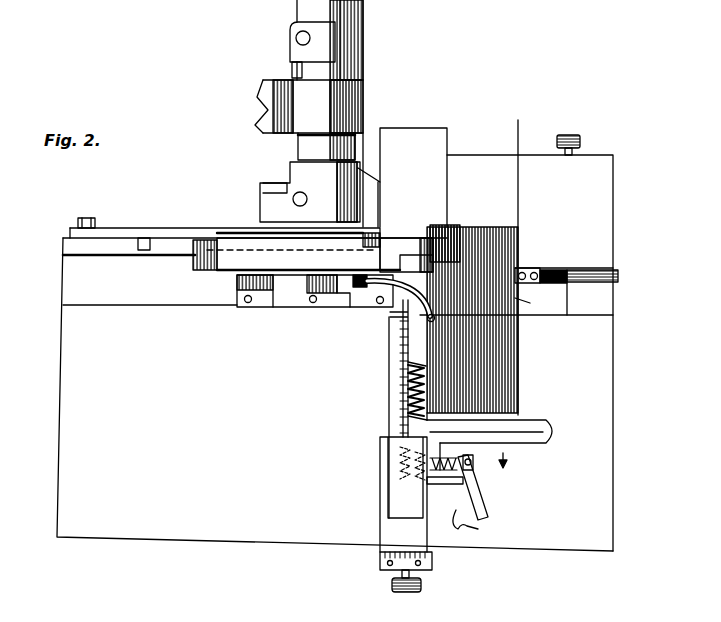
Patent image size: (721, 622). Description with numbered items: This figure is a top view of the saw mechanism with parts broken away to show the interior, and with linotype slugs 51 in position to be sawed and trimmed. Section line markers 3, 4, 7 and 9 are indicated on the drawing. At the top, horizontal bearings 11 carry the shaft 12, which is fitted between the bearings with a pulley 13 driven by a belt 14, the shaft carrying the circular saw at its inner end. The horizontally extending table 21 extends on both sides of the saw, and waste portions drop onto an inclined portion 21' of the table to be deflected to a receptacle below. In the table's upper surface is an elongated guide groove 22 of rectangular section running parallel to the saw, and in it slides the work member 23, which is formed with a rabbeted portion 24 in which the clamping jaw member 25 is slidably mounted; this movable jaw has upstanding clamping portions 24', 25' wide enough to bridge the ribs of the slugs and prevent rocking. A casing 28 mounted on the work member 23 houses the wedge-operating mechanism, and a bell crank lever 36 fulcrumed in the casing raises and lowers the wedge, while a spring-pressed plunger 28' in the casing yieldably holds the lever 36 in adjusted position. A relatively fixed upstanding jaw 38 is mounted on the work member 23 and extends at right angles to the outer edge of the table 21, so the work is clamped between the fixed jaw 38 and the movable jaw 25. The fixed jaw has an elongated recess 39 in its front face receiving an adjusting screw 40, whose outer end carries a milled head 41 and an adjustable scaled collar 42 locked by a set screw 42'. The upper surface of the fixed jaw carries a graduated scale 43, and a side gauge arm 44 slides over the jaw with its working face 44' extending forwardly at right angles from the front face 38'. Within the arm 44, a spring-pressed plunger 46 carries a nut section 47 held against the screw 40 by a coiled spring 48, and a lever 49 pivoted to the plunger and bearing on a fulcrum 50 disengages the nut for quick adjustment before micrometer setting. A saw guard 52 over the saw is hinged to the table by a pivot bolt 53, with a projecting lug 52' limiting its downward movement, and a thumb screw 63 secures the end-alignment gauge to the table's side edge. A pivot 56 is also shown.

The section line 3 is at (593, 247).
The section line 4 is at (393, 460).
The section line 7 is at (316, 2).
The section line 9 is at (518, 126).
The horizontal bearings 11 is at (323, 58).
The shaft 12 is at (340, 1).
The pulley 13 is at (367, 137).
The belt 14 is at (267, 110).
The table 21 is at (316, 389).
The inclined portion of the table 21' is at (429, 177).
The guide groove 22 is at (607, 310).
The slidable work member 23 is at (563, 303).
The rabbeted portion 24 is at (566, 260).
The upstanding clamping portion 24' is at (542, 235).
The clamping jaw member 25 is at (539, 302).
The upstanding clamping portion 25' is at (543, 254).
The casing 28 is at (315, 309).
The spring-pressed plunger 28' is at (324, 308).
The bell crank lever 36 is at (393, 310).
The fixed jaw 38 is at (379, 409).
The front face of the fixed jaw 38' is at (365, 339).
The elongated recess 39 is at (405, 418).
The adjusting screw 40 is at (405, 398).
The milled head 41 is at (392, 586).
The adjustable collar 42 is at (425, 565).
The set screw 42' is at (360, 571).
The graduated scale 43 is at (403, 366).
The side gauge arm 44 is at (511, 455).
The working face 44' is at (510, 437).
The spring-pressed plunger 46 is at (474, 465).
The nut section 47 is at (426, 482).
The coiled spring 48 is at (445, 453).
The lever 49 is at (484, 508).
The fulcrum 50 is at (465, 527).
The linotype slugs 51 is at (497, 389).
The saw guard 52 is at (313, 227).
The projecting lug 52' is at (166, 228).
The pivot bolt 53 is at (87, 219).
The pivot 56 is at (426, 317).
The thumb screw 63 is at (580, 141).